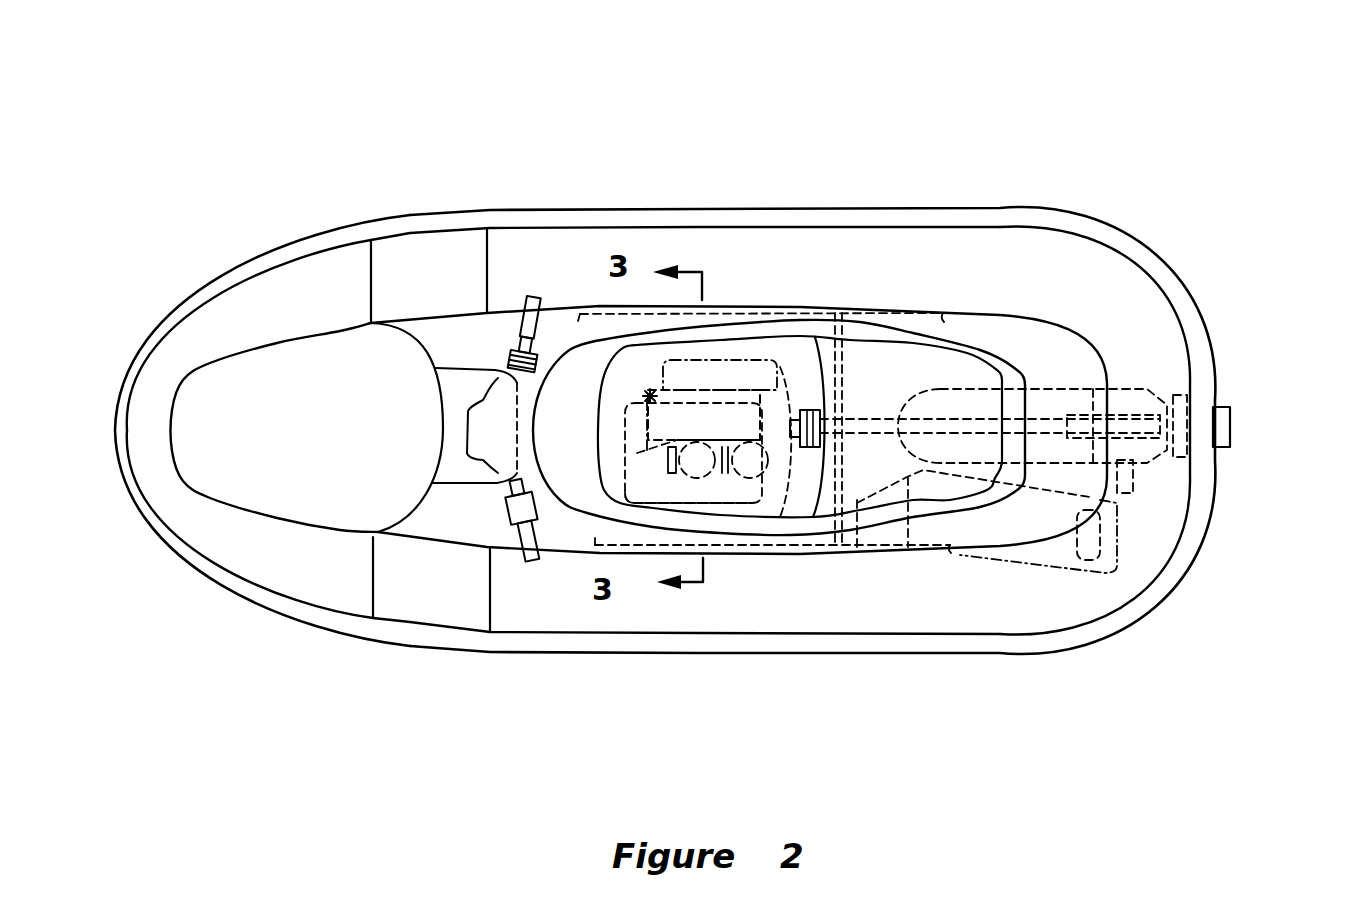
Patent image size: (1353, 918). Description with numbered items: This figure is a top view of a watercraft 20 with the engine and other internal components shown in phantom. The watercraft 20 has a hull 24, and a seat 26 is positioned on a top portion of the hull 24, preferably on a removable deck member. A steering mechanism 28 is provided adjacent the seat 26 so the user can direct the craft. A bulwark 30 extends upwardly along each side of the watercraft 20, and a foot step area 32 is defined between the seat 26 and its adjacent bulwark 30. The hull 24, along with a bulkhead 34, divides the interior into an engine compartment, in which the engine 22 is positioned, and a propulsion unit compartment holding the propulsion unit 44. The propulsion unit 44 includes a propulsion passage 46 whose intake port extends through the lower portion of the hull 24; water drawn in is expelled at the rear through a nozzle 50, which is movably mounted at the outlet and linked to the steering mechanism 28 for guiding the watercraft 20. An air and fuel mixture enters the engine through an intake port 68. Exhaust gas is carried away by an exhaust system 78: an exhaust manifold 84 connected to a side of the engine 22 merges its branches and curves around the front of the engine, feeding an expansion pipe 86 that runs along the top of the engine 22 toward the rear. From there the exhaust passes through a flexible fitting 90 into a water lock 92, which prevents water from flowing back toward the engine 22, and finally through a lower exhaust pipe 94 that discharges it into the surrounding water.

The watercraft 20 is at (988, 85).
The engine 22 is at (691, 440).
The hull 24 is at (325, 648).
The seat 26 is at (957, 370).
The steering mechanism 28 is at (535, 293).
The bulwark 30 is at (858, 222).
The foot step area 32 is at (808, 247).
The bulkhead 34 is at (847, 367).
The propulsion unit 44 is at (1161, 342).
The propulsion passage 46 is at (1075, 371).
The nozzle 50 is at (1235, 421).
The intake port 68 is at (813, 533).
The exhaust system 78 is at (645, 392).
The exhaust manifold 84 is at (728, 507).
The expansion pipe 86 is at (730, 390).
The flexible fitting 90 is at (880, 545).
The water lock 92 is at (1013, 563).
The lower exhaust pipe 94 is at (1103, 537).